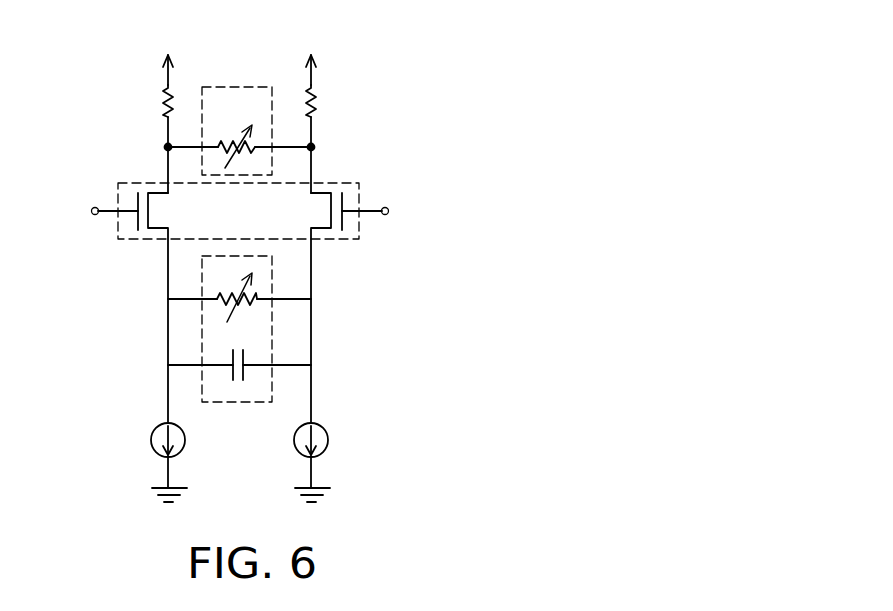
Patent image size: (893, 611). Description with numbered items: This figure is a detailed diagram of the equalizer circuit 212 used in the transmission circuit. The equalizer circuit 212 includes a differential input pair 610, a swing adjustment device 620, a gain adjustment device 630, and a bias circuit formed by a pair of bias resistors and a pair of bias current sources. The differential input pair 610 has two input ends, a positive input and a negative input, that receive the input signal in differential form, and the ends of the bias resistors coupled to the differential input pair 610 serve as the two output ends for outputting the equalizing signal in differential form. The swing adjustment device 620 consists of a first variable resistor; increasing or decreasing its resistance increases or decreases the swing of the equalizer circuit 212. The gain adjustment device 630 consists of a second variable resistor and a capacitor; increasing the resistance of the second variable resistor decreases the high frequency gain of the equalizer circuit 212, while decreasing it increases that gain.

The equalizer circuit 212 is at (551, 515).
The differential input pair 610 is at (360, 190).
The swing adjustment device 620 is at (230, 85).
The gain adjustment device 630 is at (228, 403).